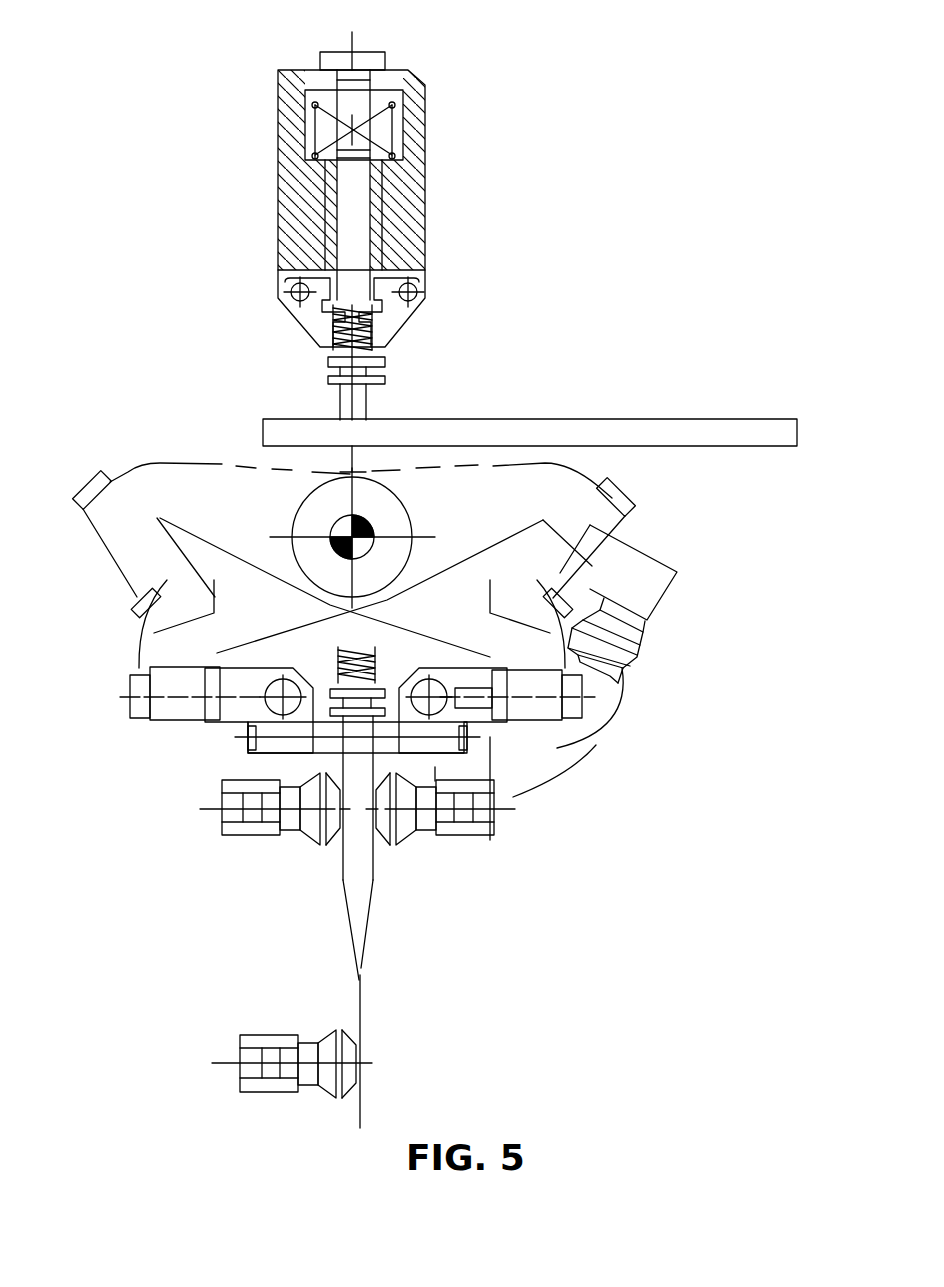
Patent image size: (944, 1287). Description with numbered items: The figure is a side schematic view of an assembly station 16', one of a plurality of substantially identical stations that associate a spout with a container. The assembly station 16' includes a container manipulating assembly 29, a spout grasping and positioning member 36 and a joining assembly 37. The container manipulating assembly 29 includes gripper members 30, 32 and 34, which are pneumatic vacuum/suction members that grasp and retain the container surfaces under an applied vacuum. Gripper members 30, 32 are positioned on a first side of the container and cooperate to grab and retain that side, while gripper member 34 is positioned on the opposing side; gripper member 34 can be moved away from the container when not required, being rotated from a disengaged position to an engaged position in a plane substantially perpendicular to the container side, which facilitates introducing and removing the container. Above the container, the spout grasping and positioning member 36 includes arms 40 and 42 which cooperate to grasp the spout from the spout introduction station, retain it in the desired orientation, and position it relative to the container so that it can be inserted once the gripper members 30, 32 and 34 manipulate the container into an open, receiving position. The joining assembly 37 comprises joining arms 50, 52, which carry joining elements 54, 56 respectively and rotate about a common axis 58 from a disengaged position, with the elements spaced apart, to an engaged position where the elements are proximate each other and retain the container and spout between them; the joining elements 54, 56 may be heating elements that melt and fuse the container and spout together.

The assembly station 16' is at (413, 580).
The spout grasping and positioning member 36 is at (424, 342).
The arm 40 is at (306, 327).
The arm 42 is at (423, 321).
The joining assembly 37 is at (668, 497).
The axis 58 is at (368, 532).
The joining arm 50 is at (108, 567).
The joining arm 52 is at (648, 527).
The joining element 54 is at (206, 722).
The joining element 56 is at (576, 748).
The container manipulating assembly 29 is at (175, 858).
The gripper member 30 is at (324, 850).
The gripper member 34 is at (392, 856).
The gripper member 32 is at (332, 1022).